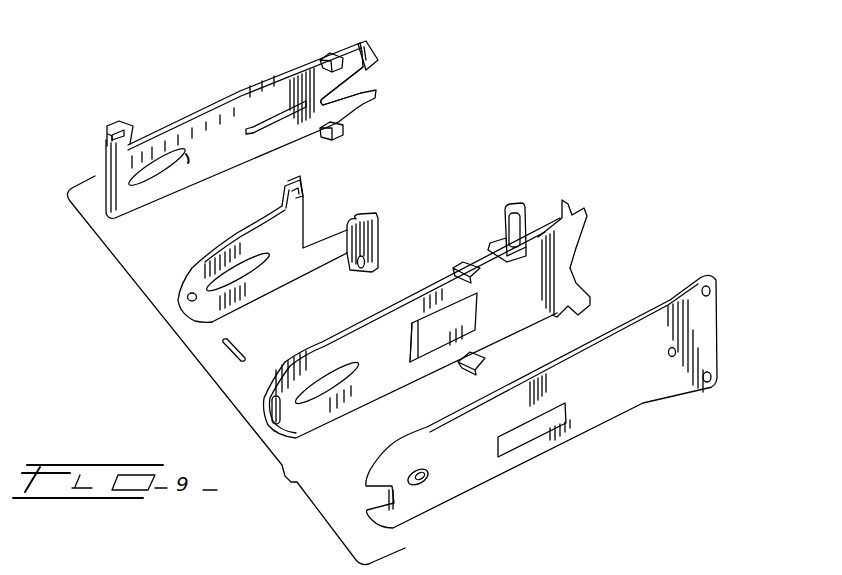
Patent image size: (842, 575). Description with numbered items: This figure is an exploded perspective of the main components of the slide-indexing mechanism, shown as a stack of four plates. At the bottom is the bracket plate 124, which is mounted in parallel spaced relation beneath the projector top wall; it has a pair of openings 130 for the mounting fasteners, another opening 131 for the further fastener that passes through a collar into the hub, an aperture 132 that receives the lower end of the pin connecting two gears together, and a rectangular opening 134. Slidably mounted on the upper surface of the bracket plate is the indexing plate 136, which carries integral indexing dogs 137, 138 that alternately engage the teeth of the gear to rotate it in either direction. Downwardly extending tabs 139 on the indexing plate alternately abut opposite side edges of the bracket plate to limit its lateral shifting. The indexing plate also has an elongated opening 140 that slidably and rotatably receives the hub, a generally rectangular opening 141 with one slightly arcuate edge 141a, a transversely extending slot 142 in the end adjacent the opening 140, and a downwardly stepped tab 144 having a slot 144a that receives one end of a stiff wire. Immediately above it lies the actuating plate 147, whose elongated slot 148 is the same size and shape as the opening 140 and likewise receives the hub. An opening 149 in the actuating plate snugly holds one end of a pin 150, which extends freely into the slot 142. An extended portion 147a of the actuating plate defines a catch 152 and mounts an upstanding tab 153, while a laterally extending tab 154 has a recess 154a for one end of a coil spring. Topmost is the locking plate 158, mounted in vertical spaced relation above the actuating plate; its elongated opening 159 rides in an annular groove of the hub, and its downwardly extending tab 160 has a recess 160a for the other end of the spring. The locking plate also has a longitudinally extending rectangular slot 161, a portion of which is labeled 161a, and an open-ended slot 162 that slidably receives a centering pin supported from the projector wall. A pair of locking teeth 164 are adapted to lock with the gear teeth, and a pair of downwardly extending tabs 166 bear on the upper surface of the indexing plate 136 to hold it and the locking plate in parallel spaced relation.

The bracket plate 124 is at (681, 386).
The openings 130 is at (711, 285).
The opening 131 is at (420, 472).
The aperture 132 is at (669, 351).
The rectangular opening 134 is at (526, 432).
The indexing plate 136 is at (372, 335).
The indexing dog 137 is at (583, 206).
The indexing dog 138 is at (588, 292).
The tabs 139 is at (482, 272).
The elongated opening 140 is at (340, 382).
The rectangular opening 141 is at (477, 318).
The arcuate edge 141a is at (418, 330).
The transversely extending slot 142 is at (274, 400).
The tab 144 is at (503, 238).
The slot 144a is at (521, 215).
The actuating plate 147 is at (310, 208).
The extended portion 147a is at (323, 257).
The elongated slot 148 is at (250, 280).
The opening 149 is at (188, 295).
The pin 150 is at (240, 350).
The catch 152 is at (356, 220).
The upstanding tab 153 is at (358, 268).
The laterally extending tab 154 is at (283, 190).
The recess 154a is at (302, 190).
The locking plate 158 is at (232, 108).
The elongated opening 159 is at (152, 170).
The tab 160 is at (120, 124).
The recess 160a is at (107, 137).
The rectangular slot 161 is at (293, 117).
The rib end 161a is at (255, 128).
The open ended slot 162 is at (352, 90).
The locking teeth 164 is at (378, 60).
The tabs 166 is at (325, 59).